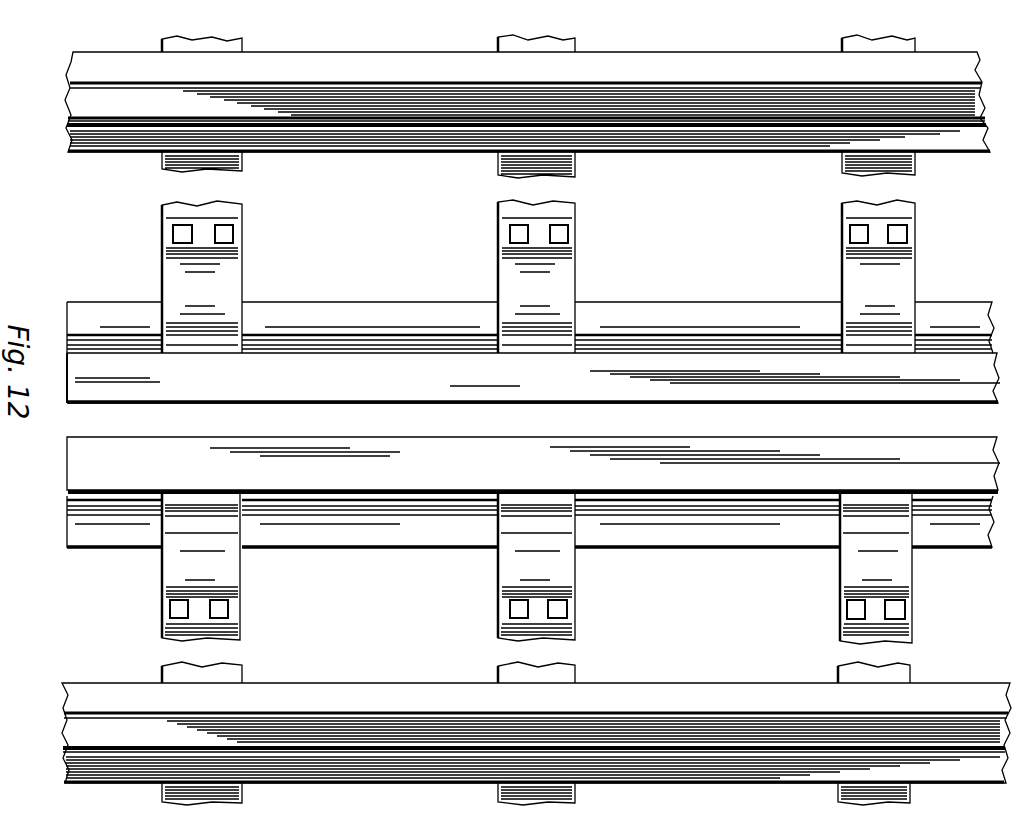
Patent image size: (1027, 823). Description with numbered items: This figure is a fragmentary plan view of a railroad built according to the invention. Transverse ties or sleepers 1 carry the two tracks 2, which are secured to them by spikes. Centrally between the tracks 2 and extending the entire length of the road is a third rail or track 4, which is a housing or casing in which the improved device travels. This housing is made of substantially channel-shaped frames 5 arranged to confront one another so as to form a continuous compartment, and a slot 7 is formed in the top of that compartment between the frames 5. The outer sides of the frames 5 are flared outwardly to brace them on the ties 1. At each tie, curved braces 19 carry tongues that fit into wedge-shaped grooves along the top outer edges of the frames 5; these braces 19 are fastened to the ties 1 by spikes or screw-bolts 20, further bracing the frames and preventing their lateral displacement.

The ties or sleepers 1 is at (233, 47).
The tracks 2 is at (536, 417).
The third rail or track 4 is at (533, 422).
The channel-shaped frames 5 is at (656, 331).
The slot 7 is at (500, 417).
The curved braces 19 is at (222, 290).
The spikes or screw-bolts 20 is at (228, 234).